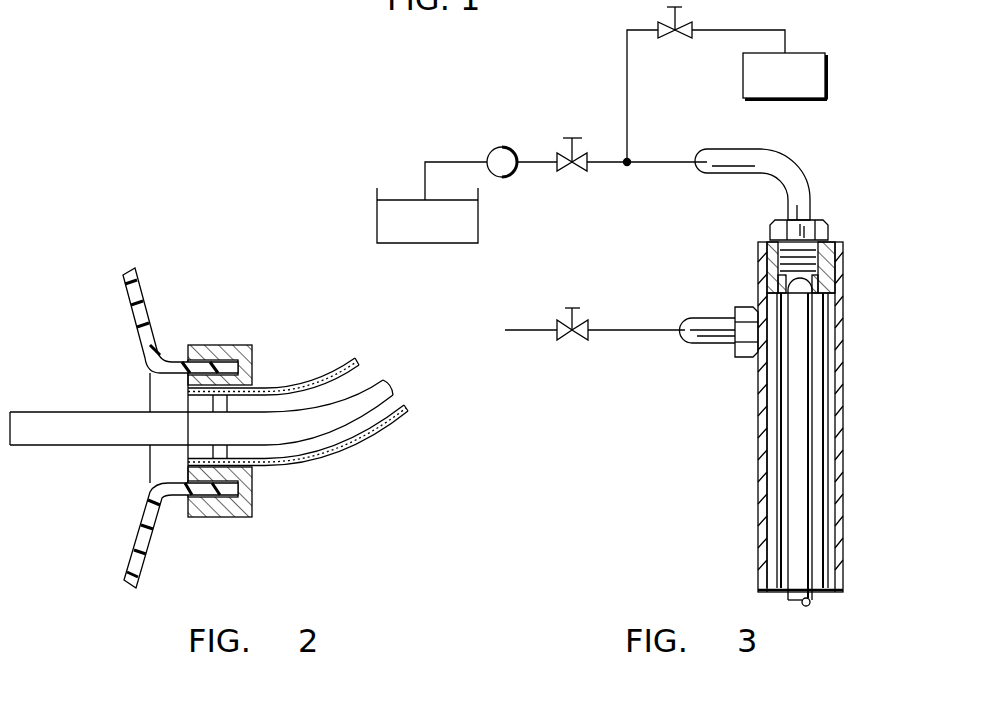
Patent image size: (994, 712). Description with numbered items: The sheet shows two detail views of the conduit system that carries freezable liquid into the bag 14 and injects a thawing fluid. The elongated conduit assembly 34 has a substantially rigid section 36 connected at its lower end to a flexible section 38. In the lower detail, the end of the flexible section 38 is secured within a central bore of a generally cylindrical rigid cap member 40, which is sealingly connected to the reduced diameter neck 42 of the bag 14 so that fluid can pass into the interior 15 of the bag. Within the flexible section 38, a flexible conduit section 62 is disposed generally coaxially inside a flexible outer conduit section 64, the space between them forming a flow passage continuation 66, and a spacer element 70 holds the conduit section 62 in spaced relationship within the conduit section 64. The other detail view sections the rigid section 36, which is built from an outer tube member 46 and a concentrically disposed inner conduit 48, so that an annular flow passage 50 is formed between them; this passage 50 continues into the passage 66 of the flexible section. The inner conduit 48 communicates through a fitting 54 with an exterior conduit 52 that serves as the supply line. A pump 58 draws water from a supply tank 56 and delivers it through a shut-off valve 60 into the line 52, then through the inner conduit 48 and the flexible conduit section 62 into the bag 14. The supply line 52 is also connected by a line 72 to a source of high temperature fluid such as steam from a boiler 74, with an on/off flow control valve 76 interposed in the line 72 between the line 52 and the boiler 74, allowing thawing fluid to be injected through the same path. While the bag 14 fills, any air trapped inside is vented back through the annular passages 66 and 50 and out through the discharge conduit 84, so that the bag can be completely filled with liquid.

In FIG. 2, the bag 14 is at (156, 304).
In FIG. 2, the interior of the bag 15 is at (176, 476).
In FIG. 3, the conduit assembly 34 is at (791, 424).
In FIG. 3, the rigid section 36 is at (757, 473).
In FIG. 2, the flexible section 38 is at (298, 433).
In FIG. 2, the cap member 40 is at (212, 345).
In FIG. 2, the neck 42 is at (229, 492).
In FIG. 3, the outer tube member 46 is at (757, 557).
In FIG. 3, the inner conduit 48 is at (813, 455).
In FIG. 3, the flow passage 50 is at (828, 488).
In FIG. 3, the exterior conduit 52 is at (657, 162).
In FIG. 3, the fitting 54 is at (823, 220).
In FIG. 3, the supply tank 56 is at (478, 218).
In FIG. 3, the pump 58 is at (491, 151).
In FIG. 3, the shut-off valve 60 is at (578, 169).
In FIG. 2, the flexible conduit section 62 is at (315, 405).
In FIG. 2, the flexible outer conduit section 64 is at (295, 467).
In FIG. 2, the flow passage continuation 66 is at (363, 428).
In FIG. 2, the spacer element 70 is at (220, 408).
In FIG. 3, the steam line 72 is at (714, 30).
In FIG. 3, the boiler 74 is at (825, 78).
In FIG. 3, the flow control valve 76 is at (680, 39).
In FIG. 3, the discharge conduit 84 is at (622, 330).